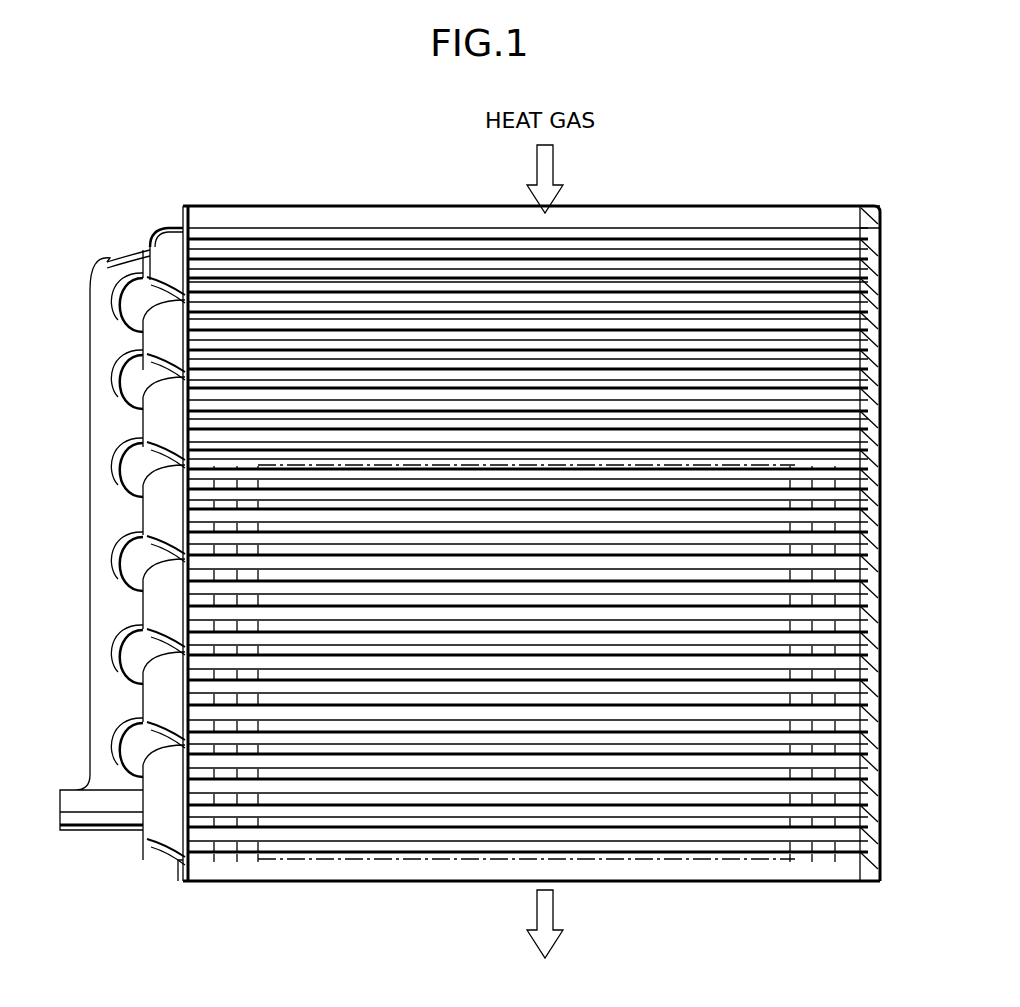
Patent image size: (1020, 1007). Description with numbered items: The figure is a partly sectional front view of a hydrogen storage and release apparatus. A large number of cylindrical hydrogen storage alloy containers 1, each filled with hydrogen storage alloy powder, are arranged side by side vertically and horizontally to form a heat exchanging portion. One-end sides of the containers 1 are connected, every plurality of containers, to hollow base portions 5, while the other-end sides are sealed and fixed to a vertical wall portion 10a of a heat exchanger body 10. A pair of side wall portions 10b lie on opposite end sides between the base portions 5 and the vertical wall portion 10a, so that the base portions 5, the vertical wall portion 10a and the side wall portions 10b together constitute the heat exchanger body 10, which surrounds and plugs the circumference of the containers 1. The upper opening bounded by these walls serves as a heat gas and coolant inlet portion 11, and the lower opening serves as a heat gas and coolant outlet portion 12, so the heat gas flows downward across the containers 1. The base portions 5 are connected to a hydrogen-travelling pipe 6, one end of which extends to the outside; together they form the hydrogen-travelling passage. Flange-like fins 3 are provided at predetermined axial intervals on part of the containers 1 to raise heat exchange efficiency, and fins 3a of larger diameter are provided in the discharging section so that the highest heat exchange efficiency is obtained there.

The hydrogen storage alloy container 1 is at (830, 232).
The fin 3 is at (790, 805).
The large-diameter fin 3a is at (816, 862).
The hollow base portion 5 is at (162, 228).
The hydrogen-travelling pipe 6 is at (90, 375).
The heat exchanger body 10 is at (880, 394).
The vertical wall portion 10a is at (882, 294).
The side wall portion 10b is at (225, 884).
The heat gas and coolant inlet portion 11 is at (331, 196).
The heat gas and coolant outlet portion 12 is at (440, 880).